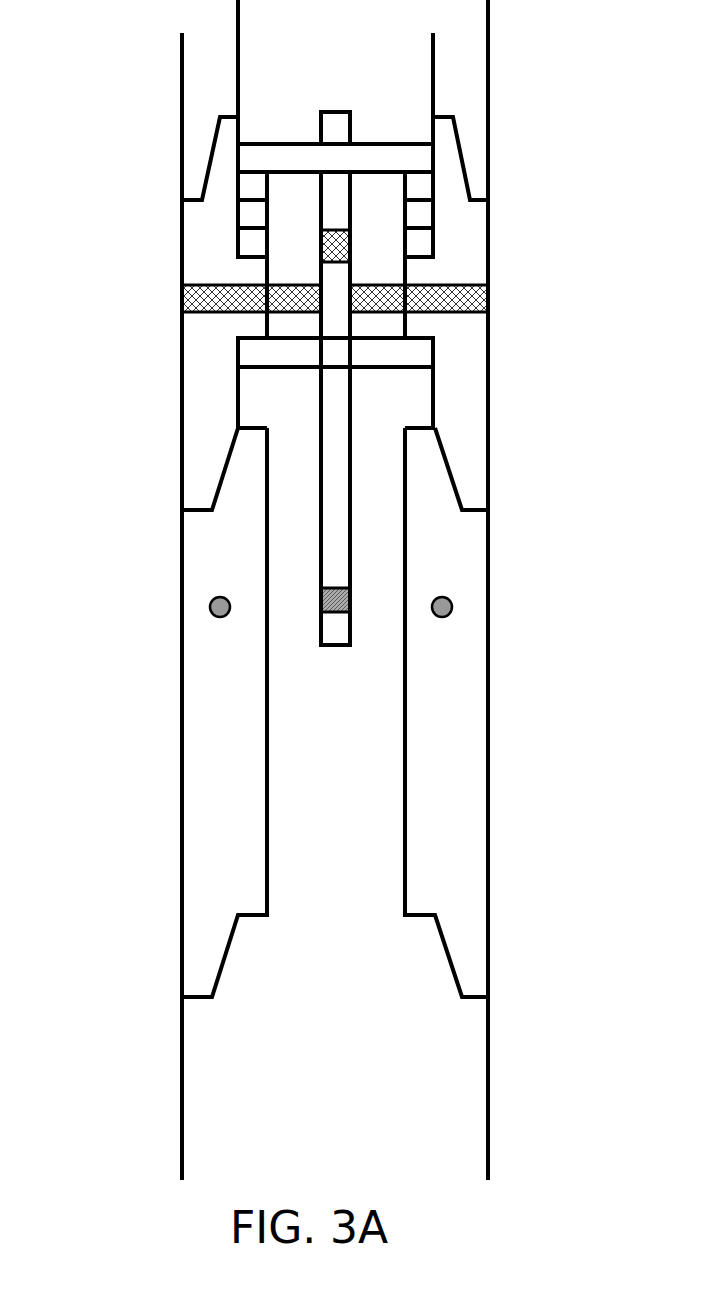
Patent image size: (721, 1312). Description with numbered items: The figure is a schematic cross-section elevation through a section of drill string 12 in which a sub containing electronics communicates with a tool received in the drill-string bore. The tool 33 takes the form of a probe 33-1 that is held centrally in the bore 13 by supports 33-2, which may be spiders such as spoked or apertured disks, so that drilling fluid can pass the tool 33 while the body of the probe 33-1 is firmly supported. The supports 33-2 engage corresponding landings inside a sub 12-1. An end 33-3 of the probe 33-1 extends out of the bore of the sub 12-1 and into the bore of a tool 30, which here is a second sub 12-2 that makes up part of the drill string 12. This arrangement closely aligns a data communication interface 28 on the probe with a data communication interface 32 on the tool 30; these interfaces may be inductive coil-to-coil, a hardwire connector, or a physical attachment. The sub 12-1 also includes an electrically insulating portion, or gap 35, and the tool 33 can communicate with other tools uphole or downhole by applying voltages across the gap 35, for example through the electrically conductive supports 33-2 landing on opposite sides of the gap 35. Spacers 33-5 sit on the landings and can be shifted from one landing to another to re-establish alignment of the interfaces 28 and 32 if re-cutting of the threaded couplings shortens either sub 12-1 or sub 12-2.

The drill string 12 is at (530, 88).
The sub 12-1 is at (488, 227).
The sub 12-2 is at (488, 710).
The bore 13 is at (335, 937).
The data communication interface 28 is at (320, 601).
The tool 30 is at (460, 784).
The data communication interface 32 is at (452, 607).
The tool 33 is at (338, 432).
The probe 33-1 is at (320, 396).
The supports 33-2 is at (265, 148).
The end of probe 33-3 is at (320, 645).
The spacers 33-5 is at (238, 212).
The electrically insulating portion (gap) 35 is at (447, 285).